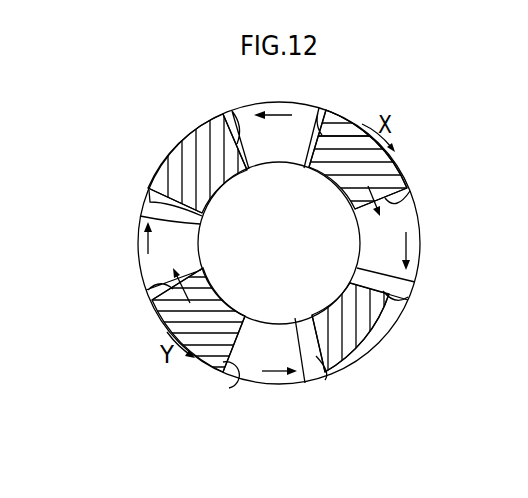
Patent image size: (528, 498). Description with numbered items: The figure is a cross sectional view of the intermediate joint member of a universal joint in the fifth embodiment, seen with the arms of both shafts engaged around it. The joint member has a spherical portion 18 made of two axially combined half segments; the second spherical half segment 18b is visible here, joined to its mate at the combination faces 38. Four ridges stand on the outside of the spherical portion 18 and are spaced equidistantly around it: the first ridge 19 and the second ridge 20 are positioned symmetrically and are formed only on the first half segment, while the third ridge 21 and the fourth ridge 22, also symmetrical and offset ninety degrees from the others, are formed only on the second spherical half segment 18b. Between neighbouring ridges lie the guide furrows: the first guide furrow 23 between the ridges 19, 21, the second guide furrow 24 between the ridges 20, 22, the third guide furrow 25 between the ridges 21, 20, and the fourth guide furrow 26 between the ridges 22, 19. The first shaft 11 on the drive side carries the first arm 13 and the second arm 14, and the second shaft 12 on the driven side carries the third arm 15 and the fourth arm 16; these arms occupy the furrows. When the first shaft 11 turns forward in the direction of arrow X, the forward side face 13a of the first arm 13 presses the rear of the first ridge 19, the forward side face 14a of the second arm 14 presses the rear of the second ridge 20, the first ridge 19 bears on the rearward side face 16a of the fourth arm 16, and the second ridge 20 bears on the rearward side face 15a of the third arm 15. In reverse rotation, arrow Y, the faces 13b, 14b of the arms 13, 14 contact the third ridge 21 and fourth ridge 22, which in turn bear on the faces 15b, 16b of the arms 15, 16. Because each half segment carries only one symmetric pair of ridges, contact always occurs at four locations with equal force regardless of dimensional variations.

The first shaft 11 is at (410, 177).
The second shaft 12 is at (160, 168).
The first arm 13 is at (400, 176).
The forward side face of the first arm 13a is at (410, 193).
The forward side face of the first arm (reverse rotation) 13b is at (320, 110).
The second arm 14 is at (208, 355).
The forward side face of the second arm 14a is at (150, 290).
The forward side face of the second arm (reverse rotation) 14b is at (232, 378).
The third arm 15 is at (195, 150).
The rearward side face of the third arm 15a is at (148, 197).
The rearward side face of the third arm (reverse rotation) 15b is at (231, 111).
The fourth arm 16 is at (353, 350).
The rearward side face of the fourth arm 16a is at (408, 296).
The rearward side face of the fourth arm (reverse rotation) 16b is at (327, 373).
The spherical portion 18 is at (305, 383).
The second spherical half segment 18b is at (415, 278).
The first ridge 19 is at (421, 220).
The second ridge 20 is at (150, 267).
The third ridge 21 is at (296, 102).
The fourth ridge 22 is at (276, 381).
The first guide furrow 23 is at (340, 135).
The second guide furrow 24 is at (172, 312).
The third guide furrow 25 is at (240, 176).
The fourth guide furrow 26 is at (388, 322).
The combination faces 38 is at (140, 216).